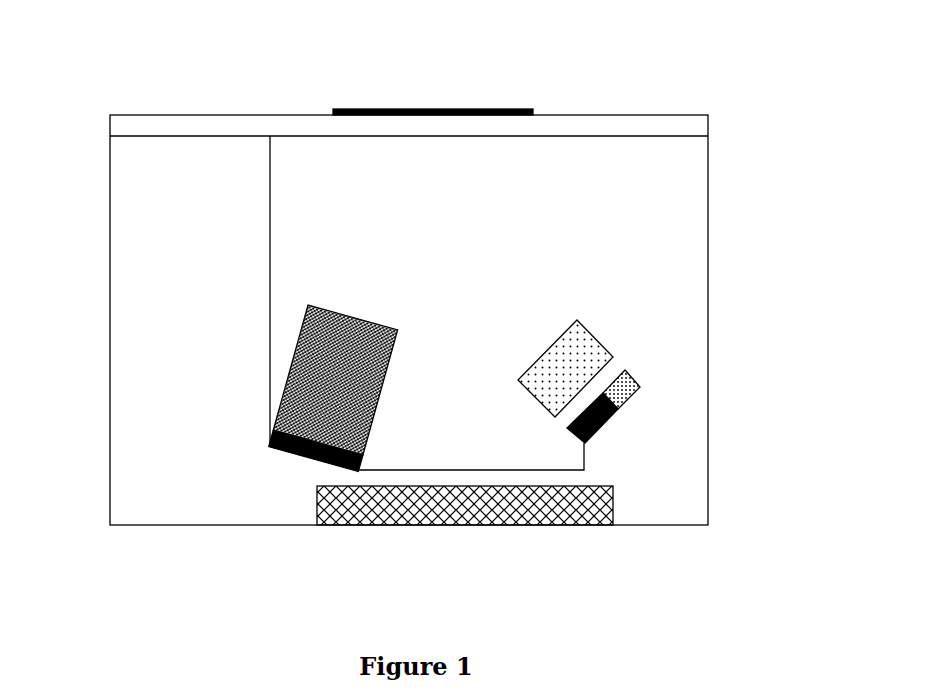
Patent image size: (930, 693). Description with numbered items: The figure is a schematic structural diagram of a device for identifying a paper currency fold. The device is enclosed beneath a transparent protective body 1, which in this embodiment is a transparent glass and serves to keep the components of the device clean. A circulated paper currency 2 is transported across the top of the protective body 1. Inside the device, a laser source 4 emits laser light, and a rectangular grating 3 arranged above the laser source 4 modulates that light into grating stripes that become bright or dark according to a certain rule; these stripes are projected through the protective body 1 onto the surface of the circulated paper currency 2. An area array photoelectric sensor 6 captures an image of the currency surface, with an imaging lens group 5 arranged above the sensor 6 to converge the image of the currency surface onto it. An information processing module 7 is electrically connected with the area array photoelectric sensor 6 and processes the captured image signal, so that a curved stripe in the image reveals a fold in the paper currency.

The transparent protective body 1 is at (257, 127).
The circulated paper currency 2 is at (412, 101).
The rectangular grating 3 is at (568, 363).
The laser source 4 is at (614, 397).
The imaging lens group 5 is at (310, 360).
The area array photoelectric sensor 6 is at (300, 450).
The information processing module 7 is at (457, 512).